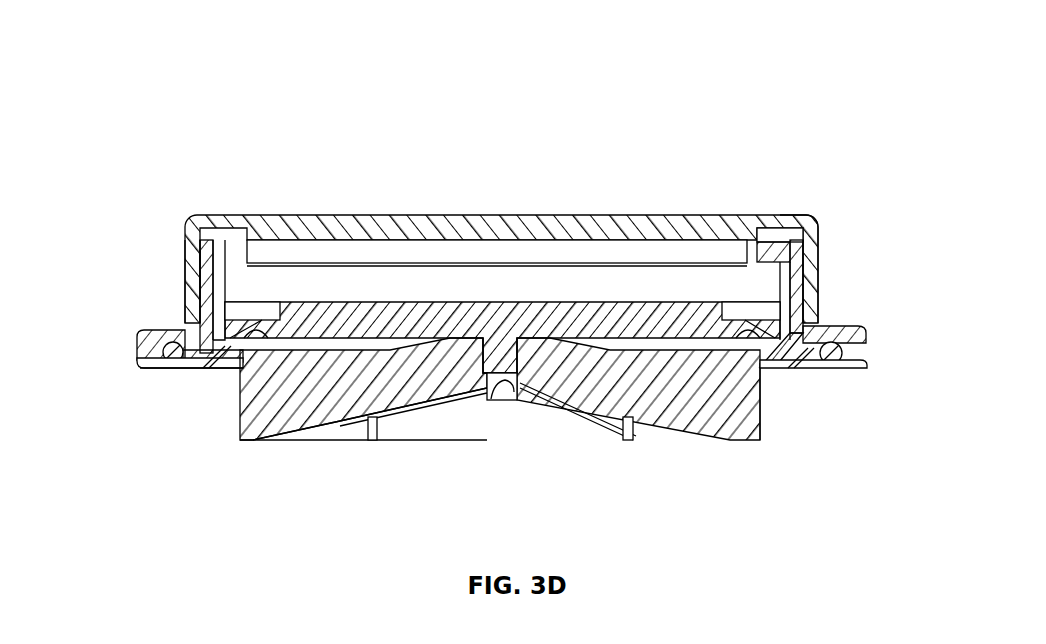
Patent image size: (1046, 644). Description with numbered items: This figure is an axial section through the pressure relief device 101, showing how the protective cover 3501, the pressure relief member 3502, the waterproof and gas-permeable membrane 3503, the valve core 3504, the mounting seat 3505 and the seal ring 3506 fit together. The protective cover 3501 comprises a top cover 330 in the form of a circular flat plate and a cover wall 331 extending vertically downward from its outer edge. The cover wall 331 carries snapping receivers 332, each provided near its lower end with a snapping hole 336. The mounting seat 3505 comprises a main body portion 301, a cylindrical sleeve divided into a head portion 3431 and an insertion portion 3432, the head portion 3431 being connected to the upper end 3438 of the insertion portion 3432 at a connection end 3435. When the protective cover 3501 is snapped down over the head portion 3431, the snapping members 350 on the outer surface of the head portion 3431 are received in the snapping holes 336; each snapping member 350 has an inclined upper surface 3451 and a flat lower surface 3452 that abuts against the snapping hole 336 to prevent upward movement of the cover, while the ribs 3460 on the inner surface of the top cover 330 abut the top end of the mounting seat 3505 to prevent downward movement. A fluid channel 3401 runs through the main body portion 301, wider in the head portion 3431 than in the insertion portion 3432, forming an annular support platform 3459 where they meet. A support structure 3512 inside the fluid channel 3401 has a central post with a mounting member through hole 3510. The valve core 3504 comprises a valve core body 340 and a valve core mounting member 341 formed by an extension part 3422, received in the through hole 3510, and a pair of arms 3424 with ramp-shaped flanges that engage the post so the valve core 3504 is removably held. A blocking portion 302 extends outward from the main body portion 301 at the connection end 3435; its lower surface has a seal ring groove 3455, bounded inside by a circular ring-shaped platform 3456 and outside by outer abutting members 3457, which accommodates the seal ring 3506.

The pressure relief device 101 is at (200, 178).
The top cover 330 is at (690, 232).
The cover wall 331 is at (818, 242).
The snapping receiver 332 is at (818, 265).
The snapping hole 336 is at (818, 283).
The head portion 3431 is at (184, 252).
The protective cover 3501 is at (488, 232).
The ribs 3460 is at (770, 230).
The snapping member 350 is at (185, 305).
The upper surface 3451 is at (185, 282).
The lower surface 3452 is at (185, 320).
The seal ring groove 3455 is at (170, 368).
The blocking portion 302 is at (160, 364).
The seal ring 3506 is at (168, 368).
The support platform 3459 is at (212, 368).
The valve core body 340 is at (633, 330).
The waterproof and gas-permeable membrane 3503 is at (387, 302).
The pressure relief member 3502 is at (733, 337).
The valve core 3504 is at (537, 323).
The main body portion 301 is at (752, 443).
The insertion portion 3432 is at (252, 445).
The fluid channel 3401 is at (340, 445).
The upper end 3438 is at (768, 385).
The valve core mounting member 341 is at (490, 393).
The mounting member through hole 3510 is at (540, 405).
The support structure 3512 is at (676, 430).
The extension part 3422 is at (500, 393).
The arms 3424 is at (514, 395).
The mounting seat 3505 is at (860, 342).
The outer abutting members 3457 is at (865, 354).
The connection end 3435 is at (805, 368).
The circular ring-shaped platform 3456 is at (795, 375).